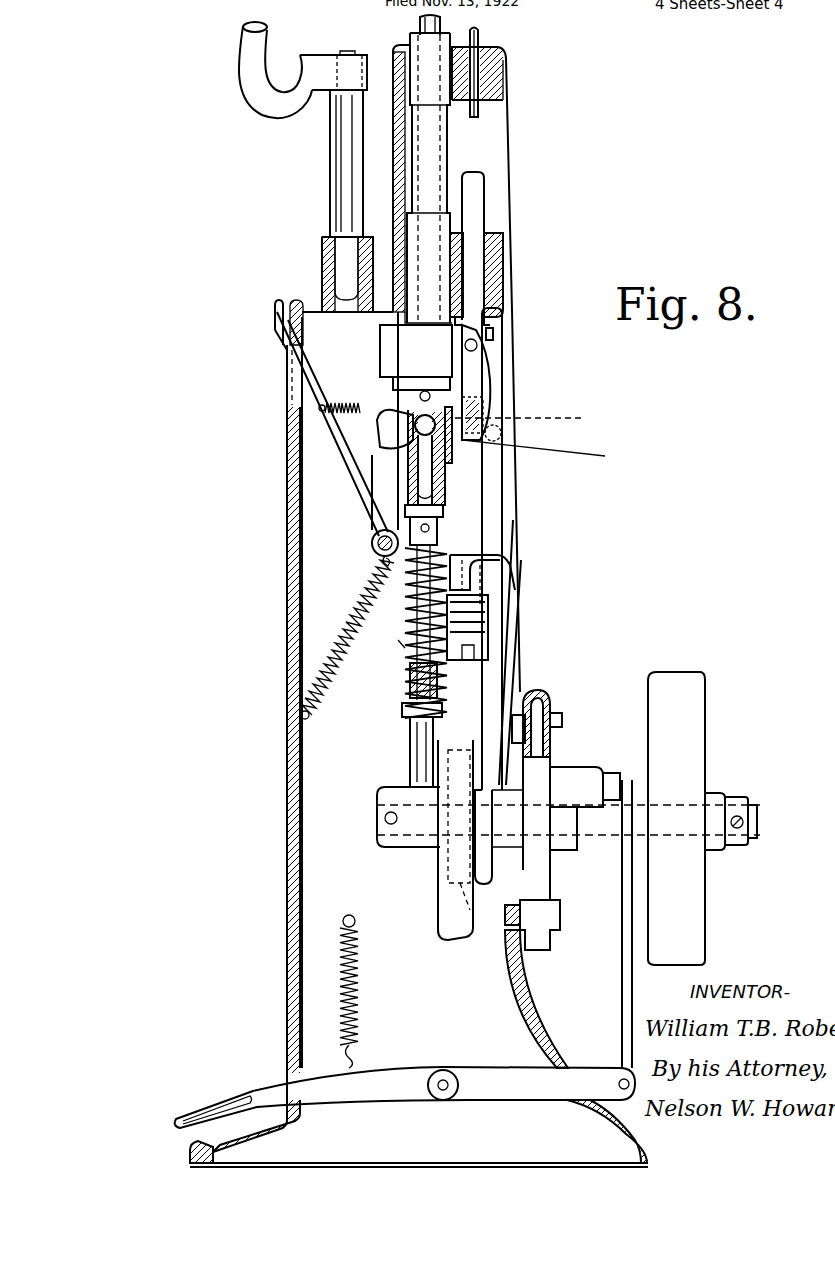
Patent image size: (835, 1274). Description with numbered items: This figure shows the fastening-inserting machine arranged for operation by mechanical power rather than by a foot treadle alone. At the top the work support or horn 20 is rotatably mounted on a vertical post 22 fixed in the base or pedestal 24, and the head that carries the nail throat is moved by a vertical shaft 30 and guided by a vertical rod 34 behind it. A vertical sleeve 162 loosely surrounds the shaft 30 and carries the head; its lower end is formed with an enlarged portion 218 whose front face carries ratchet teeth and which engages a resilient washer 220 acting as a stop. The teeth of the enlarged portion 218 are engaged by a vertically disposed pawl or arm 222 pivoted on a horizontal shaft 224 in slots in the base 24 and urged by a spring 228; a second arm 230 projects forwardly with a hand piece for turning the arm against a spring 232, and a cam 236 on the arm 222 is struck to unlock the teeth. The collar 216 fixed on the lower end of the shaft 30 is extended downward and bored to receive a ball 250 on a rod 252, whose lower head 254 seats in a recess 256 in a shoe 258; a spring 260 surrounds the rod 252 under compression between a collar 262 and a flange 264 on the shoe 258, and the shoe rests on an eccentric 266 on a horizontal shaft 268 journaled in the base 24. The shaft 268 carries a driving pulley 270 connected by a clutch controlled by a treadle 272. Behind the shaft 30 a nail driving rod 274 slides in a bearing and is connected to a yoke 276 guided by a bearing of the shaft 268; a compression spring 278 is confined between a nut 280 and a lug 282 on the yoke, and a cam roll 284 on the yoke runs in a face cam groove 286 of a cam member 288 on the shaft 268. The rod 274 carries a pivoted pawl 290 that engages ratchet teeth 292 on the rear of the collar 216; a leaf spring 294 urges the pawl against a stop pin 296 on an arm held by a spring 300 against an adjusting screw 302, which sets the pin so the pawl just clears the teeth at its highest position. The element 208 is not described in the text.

The work support or horn 20 is at (252, 52).
The vertical post 22 is at (345, 146).
The vertical shaft 30 is at (422, 25).
The vertical rod 34 is at (482, 35).
The vertical sleeve 162 is at (428, 133).
The resilient washer 220 is at (463, 315).
The nail driving rod 274 is at (472, 312).
The enlarged portion 218 is at (408, 357).
The leaf spring 294 is at (487, 360).
The pawl 290 is at (468, 410).
The cam collar 216 is at (465, 393).
The spring 300 is at (487, 428).
The adjusting screw 302 is at (537, 420).
The fork lever 208 is at (418, 420).
The cam 236 is at (395, 448).
The ball 250 is at (447, 443).
The ratchet teeth 292 is at (450, 455).
The stop pin 296 is at (552, 453).
The rod 252 is at (425, 498).
The collar 262 is at (445, 516).
The second arm 230 is at (297, 378).
The spring 232 is at (344, 405).
The pawl or arm 222 is at (388, 466).
The base or pedestal 24 is at (289, 538).
The horizontal shaft 224 is at (378, 544).
The spring 260 is at (408, 583).
The spring 228 is at (398, 645).
The shoe 258 is at (407, 655).
The head 254 is at (418, 680).
The recess 256 is at (415, 710).
The flange 264 is at (410, 735).
The eccentric 266 is at (425, 825).
The cam member 288 is at (448, 922).
The face cam groove 286 is at (471, 915).
The compression spring 278 is at (490, 596).
The yoke 276 is at (510, 608).
The lug 282 is at (475, 566).
The nut 280 is at (480, 640).
The cam roll 284 is at (525, 692).
The horizontal shaft 268 is at (606, 820).
The driving pulley 270 is at (680, 880).
The treadle 272 is at (350, 1082).